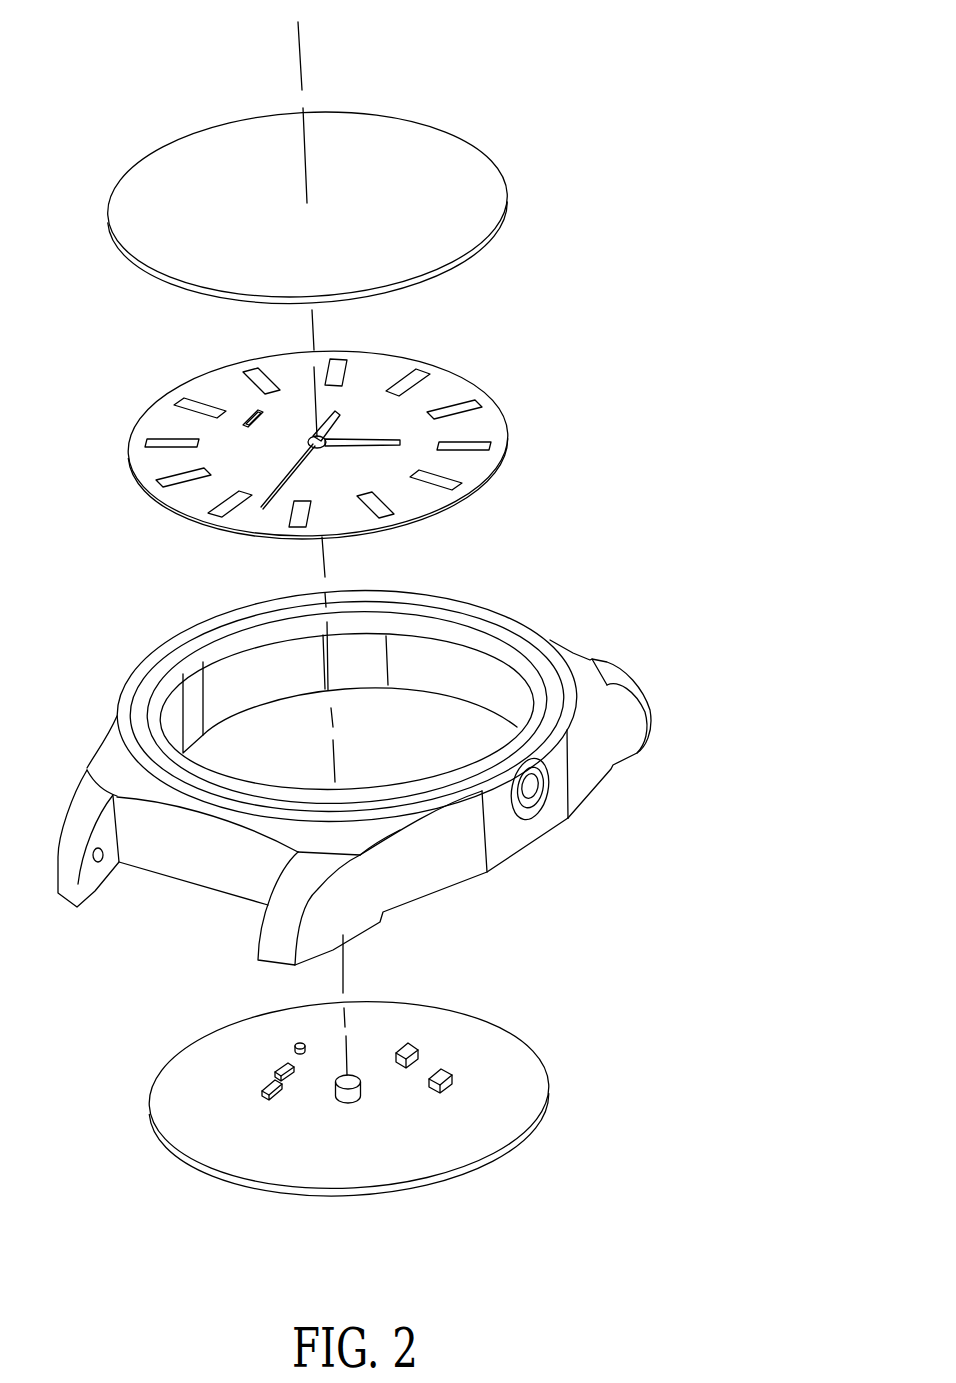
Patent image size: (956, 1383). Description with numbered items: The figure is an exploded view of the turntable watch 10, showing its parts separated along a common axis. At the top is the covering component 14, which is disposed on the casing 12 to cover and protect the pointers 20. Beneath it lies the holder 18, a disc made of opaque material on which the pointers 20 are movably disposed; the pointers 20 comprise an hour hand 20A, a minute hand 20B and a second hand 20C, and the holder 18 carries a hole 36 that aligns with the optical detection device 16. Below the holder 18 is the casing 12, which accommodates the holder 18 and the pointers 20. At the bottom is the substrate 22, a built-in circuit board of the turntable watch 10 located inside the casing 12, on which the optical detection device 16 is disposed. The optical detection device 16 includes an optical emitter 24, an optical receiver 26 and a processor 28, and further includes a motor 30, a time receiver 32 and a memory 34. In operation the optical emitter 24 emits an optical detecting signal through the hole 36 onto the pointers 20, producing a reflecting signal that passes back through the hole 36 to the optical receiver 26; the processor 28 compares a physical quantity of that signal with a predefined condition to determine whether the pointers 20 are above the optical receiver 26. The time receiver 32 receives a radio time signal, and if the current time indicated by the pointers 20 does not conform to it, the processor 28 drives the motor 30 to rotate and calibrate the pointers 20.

The turntable watch 10 is at (600, 55).
The casing 12 is at (610, 735).
The covering component 14 is at (453, 192).
The optical detection device 16 is at (172, 943).
The holder 18 is at (468, 477).
The pointers 20 is at (399, 450).
The hour hand 20A is at (338, 415).
The minute hand 20B is at (400, 440).
The second hand 20C is at (262, 508).
The substrate 22 is at (463, 1133).
The optical emitter 24 is at (298, 1045).
The optical receiver 26 is at (278, 1068).
The processor 28 is at (263, 1087).
The motor 30 is at (353, 1095).
The time receiver 32 is at (415, 1047).
The memory 34 is at (447, 1072).
The hole 36 is at (244, 410).